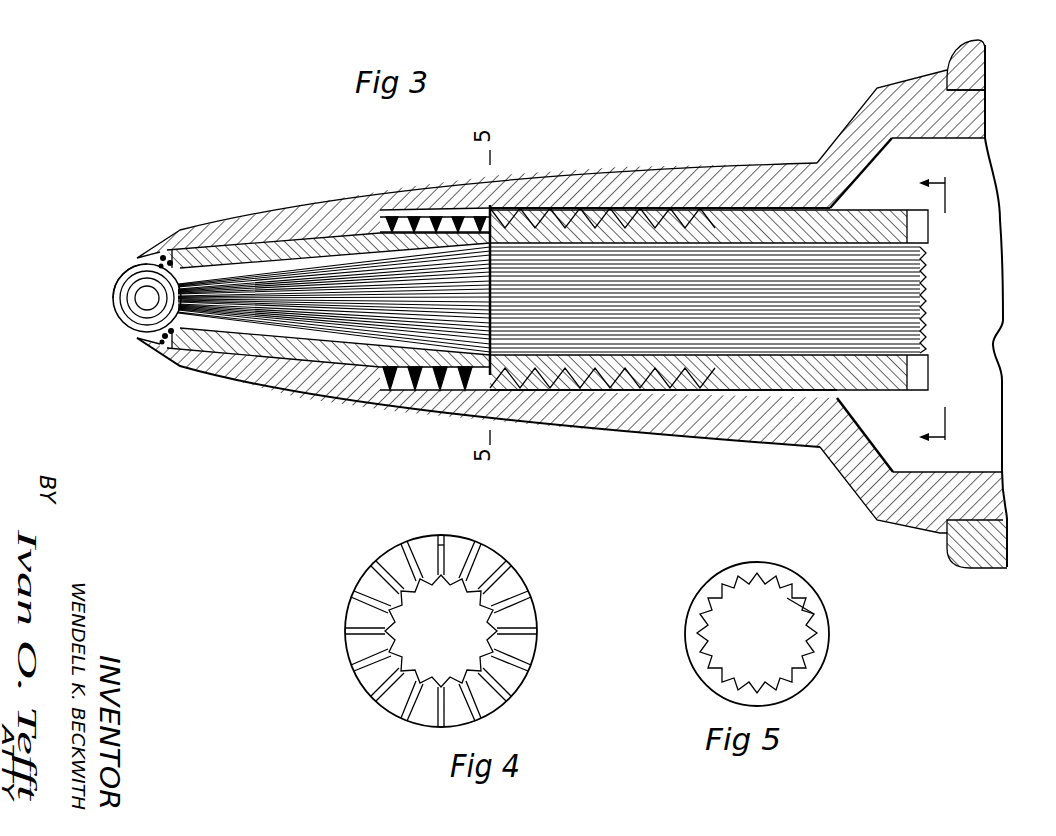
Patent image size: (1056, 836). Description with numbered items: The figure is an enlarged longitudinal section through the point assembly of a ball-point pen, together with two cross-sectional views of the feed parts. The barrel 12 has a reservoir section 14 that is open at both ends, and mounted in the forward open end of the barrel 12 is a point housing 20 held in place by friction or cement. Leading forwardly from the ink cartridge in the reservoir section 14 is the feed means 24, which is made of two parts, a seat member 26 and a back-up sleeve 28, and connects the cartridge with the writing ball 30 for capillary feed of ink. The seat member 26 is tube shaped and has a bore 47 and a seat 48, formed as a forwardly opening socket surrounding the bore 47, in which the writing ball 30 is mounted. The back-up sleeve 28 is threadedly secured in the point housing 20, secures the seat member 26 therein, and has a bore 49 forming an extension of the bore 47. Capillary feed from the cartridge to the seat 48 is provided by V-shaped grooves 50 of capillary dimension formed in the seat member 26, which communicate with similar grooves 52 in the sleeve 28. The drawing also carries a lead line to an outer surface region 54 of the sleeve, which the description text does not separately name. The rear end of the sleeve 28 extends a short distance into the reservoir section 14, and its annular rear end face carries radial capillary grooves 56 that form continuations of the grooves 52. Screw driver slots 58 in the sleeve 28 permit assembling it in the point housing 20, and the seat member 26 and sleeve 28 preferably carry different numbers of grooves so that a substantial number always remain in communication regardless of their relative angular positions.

In FIG. 3, the barrel 12 is at (990, 557).
In FIG. 3, the reservoir section 14 is at (990, 420).
In FIG. 3, the point housing 20 is at (822, 182).
In FIG. 3, the feed means 24 is at (360, 212).
In FIG. 3, the seat member 26 is at (318, 212).
In FIG. 5, the seat member 26 is at (828, 624).
In FIG. 3, the back-up sleeve 28 is at (582, 228).
In FIG. 4, the back-up sleeve 28 is at (393, 713).
In FIG. 3, the writing ball 30 is at (135, 285).
In FIG. 3, the bore 47 is at (283, 320).
In FIG. 5, the bore 47 is at (770, 650).
In FIG. 3, the seat 48 is at (145, 322).
In FIG. 3, the bore 49 is at (718, 340).
In FIG. 4, the bore 49 is at (413, 648).
In FIG. 3, the grooves 50 is at (331, 330).
In FIG. 5, the grooves 50 is at (800, 612).
In FIG. 3, the grooves 52 is at (615, 341).
In FIG. 3, the outer surface 54 is at (690, 170).
In FIG. 3, the radial capillary grooves 56 is at (930, 265).
In FIG. 4, the radial capillary grooves 56 is at (522, 564).
In FIG. 3, the screw driver slots 58 is at (910, 382).
In FIG. 4, the screw driver slots 58 is at (441, 548).